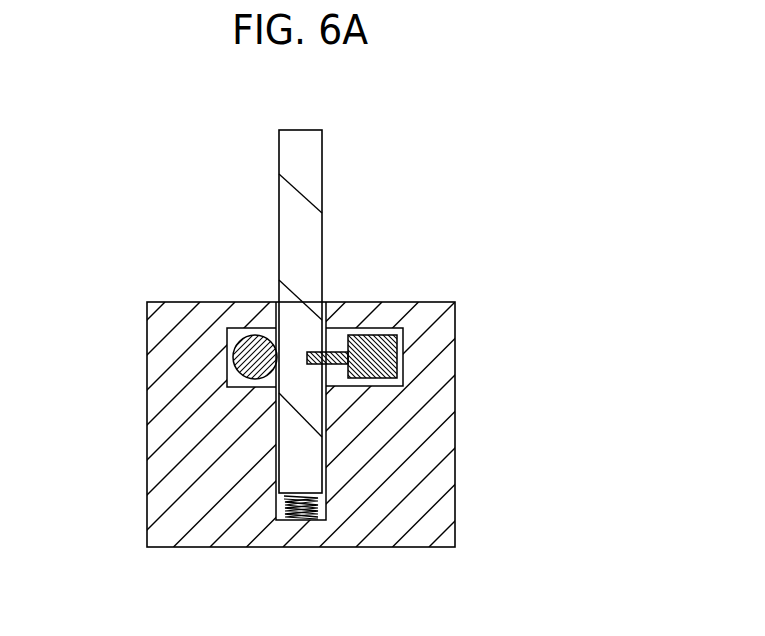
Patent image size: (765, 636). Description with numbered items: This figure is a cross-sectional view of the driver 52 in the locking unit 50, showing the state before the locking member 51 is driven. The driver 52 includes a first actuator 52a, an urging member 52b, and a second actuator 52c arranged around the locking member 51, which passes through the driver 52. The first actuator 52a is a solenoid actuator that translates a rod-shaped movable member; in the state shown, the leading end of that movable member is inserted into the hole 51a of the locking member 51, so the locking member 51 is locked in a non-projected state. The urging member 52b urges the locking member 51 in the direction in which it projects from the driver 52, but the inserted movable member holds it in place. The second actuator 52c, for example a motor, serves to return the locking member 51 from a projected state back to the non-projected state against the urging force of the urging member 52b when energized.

The locking unit 50 is at (337, 331).
The locking member 51 is at (300, 142).
The hole 51a is at (329, 346).
The driver 52 is at (152, 405).
The first actuator 52a is at (376, 342).
The urging member 52b is at (282, 508).
The second actuator 52c is at (248, 348).